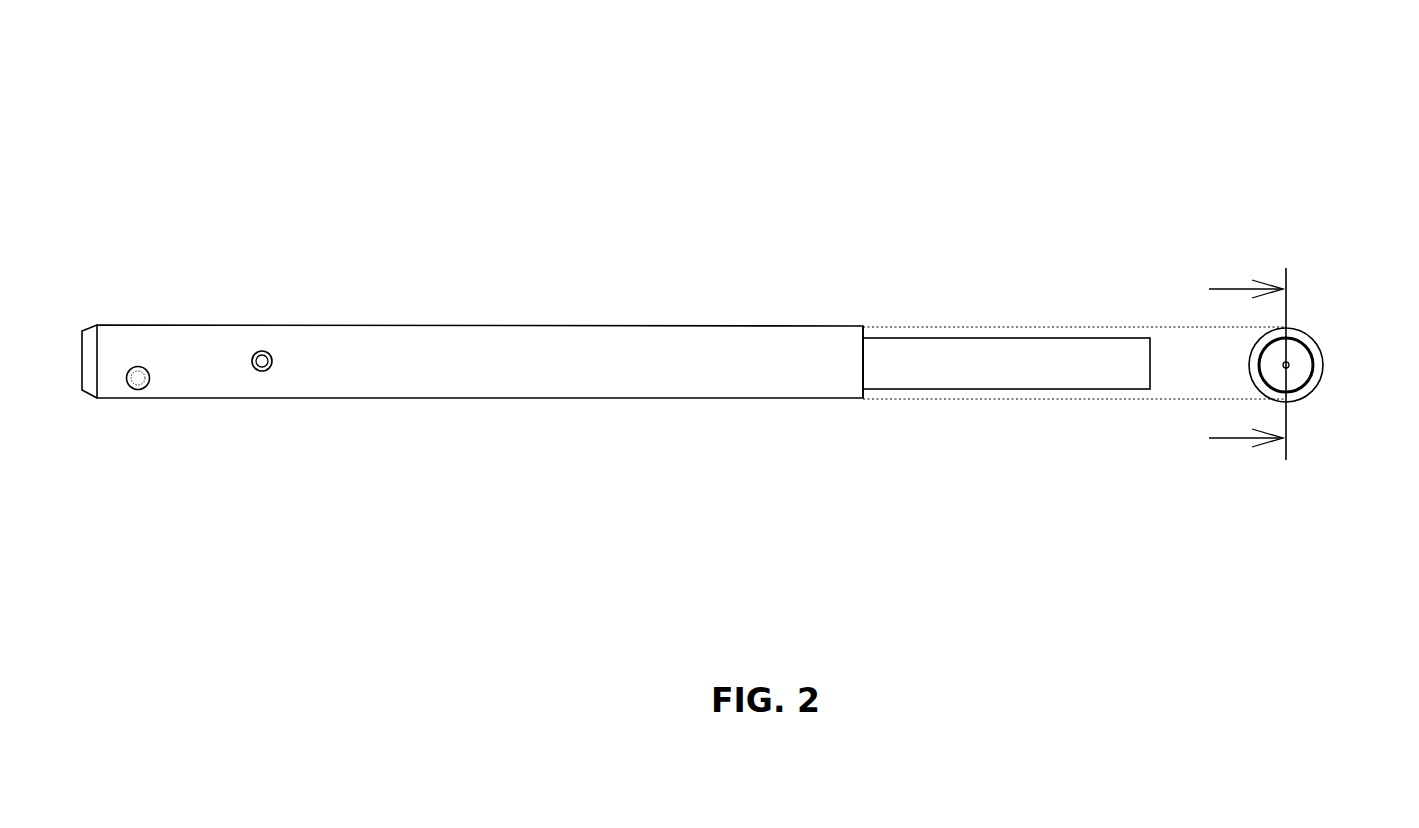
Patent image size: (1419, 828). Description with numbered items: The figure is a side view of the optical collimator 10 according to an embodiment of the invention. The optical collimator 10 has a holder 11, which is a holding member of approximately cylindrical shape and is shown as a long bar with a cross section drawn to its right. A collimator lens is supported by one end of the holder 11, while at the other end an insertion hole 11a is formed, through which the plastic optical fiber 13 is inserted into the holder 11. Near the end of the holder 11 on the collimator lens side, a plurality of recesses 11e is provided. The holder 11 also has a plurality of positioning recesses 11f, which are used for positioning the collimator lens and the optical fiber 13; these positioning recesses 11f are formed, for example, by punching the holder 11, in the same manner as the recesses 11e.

The optical collimator 10 is at (333, 79).
The holder 11 is at (577, 326).
The insertion hole 11a is at (869, 333).
The recesses 11e is at (270, 354).
The positioning recesses 11f is at (145, 372).
The plastic optical fiber 13 is at (1015, 338).